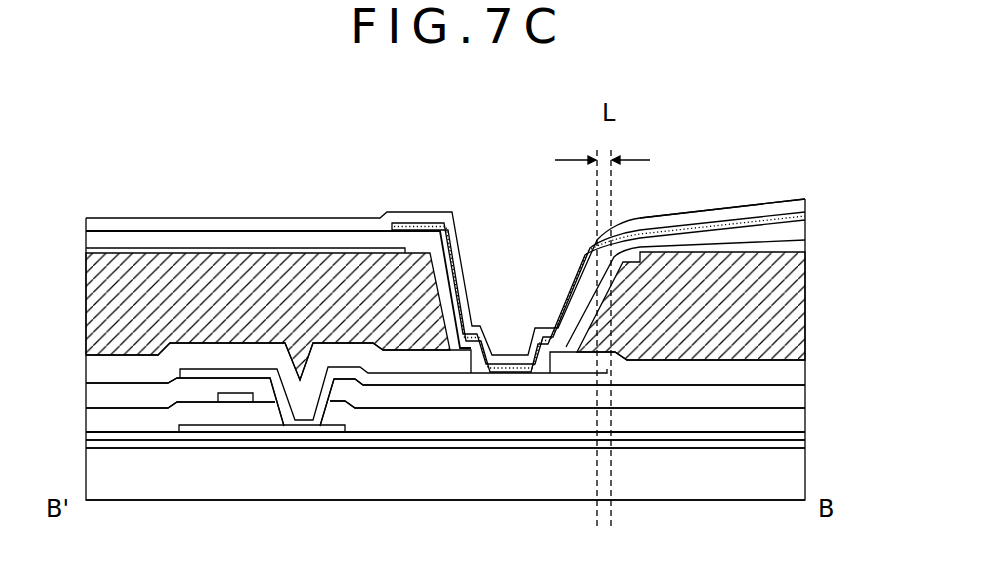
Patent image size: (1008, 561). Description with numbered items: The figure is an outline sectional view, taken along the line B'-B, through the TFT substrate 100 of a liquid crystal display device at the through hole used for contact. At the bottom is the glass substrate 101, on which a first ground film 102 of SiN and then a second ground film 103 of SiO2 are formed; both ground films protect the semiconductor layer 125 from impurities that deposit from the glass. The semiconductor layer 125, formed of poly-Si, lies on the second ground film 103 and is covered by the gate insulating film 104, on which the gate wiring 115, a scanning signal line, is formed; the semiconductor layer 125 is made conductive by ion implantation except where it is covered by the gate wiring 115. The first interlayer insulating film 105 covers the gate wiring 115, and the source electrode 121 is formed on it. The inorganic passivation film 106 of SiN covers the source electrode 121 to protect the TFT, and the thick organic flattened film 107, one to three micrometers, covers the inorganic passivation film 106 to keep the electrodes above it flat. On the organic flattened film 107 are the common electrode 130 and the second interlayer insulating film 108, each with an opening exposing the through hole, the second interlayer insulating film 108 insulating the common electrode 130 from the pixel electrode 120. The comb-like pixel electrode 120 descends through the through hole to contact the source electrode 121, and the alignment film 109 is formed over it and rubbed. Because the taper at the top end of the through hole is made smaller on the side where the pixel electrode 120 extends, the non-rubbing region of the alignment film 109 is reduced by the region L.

The TFT substrate 100 is at (130, 161).
The glass substrate 101 is at (727, 488).
The first ground film 102 is at (800, 447).
The second ground film 103 is at (800, 435).
The gate insulating film 104 is at (798, 420).
The first interlayer insulating film 105 is at (798, 395).
The inorganic passivation film 106 is at (797, 372).
The organic flattened film 107 is at (100, 298).
The second interlayer insulating film 108 is at (805, 216).
The alignment film 109 is at (727, 208).
The gate wiring 115 is at (234, 402).
The pixel electrode 120 is at (805, 199).
The source electrode 121 is at (395, 385).
The semiconductor layer 125 is at (278, 432).
The common electrode 130 is at (805, 240).